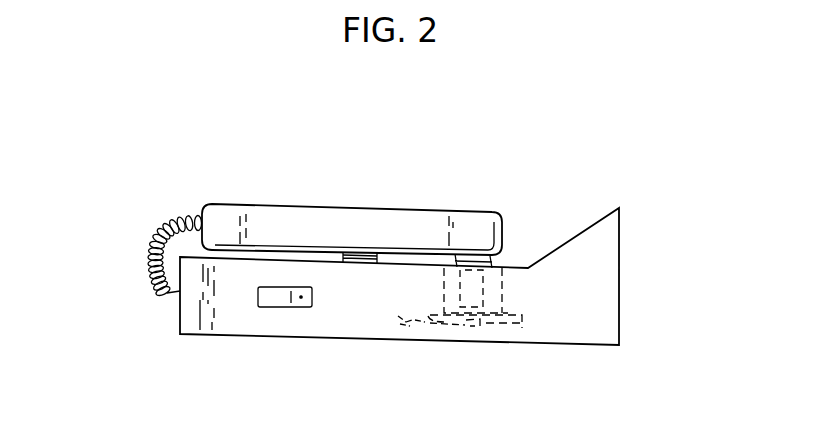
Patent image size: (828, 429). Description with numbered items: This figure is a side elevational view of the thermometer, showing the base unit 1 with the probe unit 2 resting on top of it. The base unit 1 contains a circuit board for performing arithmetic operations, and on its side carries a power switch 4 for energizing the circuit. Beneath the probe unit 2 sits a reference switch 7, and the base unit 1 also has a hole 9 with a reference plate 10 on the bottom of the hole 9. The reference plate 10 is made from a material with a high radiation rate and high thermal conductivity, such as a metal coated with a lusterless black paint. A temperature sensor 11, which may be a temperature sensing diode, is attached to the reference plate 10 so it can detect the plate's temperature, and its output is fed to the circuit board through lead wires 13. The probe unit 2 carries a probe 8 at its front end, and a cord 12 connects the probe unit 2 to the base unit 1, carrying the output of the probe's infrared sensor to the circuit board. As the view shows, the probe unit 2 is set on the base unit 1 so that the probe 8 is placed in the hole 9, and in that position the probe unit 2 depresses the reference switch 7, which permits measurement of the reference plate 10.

The base unit 1 is at (612, 203).
The probe unit 2 is at (343, 209).
The power switch 4 is at (267, 307).
The reference switch 7 is at (358, 259).
The probe 8 is at (483, 283).
The hole 9 is at (495, 297).
The reference plate 10 is at (520, 325).
The temperature sensor 11 is at (473, 327).
The cord 12 is at (150, 288).
The lead wires 13 is at (403, 323).